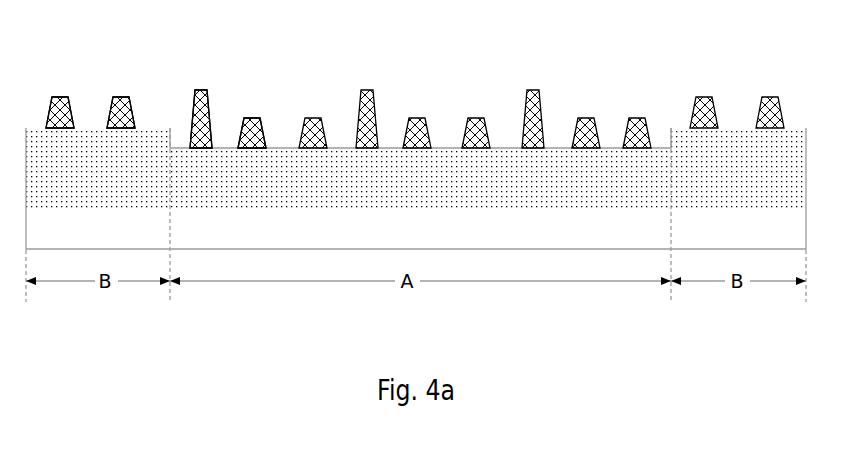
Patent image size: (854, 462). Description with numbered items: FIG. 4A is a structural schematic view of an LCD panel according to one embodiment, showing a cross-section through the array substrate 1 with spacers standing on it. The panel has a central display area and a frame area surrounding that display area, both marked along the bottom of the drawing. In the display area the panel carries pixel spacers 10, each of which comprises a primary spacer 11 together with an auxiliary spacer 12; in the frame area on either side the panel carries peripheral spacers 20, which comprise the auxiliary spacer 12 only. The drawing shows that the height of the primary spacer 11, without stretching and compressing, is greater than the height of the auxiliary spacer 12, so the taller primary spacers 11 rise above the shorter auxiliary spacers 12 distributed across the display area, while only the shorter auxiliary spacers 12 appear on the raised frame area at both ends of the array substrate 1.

The array substrate 1 is at (458, 190).
The pixel spacer 10 is at (190, 55).
The primary spacer 11 is at (200, 90).
The auxiliary spacer 12 is at (61, 97).
The peripheral spacer 20 is at (137, 47).